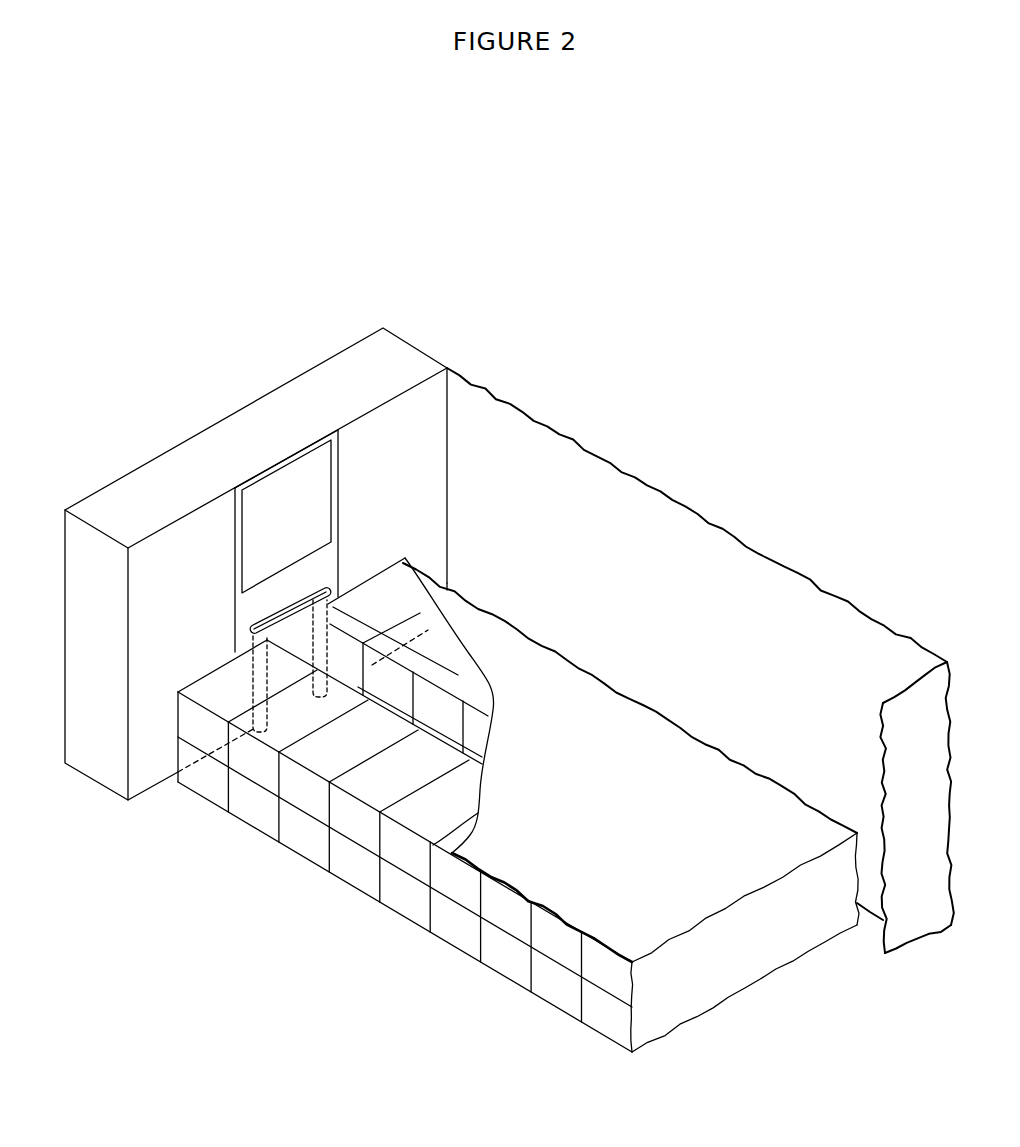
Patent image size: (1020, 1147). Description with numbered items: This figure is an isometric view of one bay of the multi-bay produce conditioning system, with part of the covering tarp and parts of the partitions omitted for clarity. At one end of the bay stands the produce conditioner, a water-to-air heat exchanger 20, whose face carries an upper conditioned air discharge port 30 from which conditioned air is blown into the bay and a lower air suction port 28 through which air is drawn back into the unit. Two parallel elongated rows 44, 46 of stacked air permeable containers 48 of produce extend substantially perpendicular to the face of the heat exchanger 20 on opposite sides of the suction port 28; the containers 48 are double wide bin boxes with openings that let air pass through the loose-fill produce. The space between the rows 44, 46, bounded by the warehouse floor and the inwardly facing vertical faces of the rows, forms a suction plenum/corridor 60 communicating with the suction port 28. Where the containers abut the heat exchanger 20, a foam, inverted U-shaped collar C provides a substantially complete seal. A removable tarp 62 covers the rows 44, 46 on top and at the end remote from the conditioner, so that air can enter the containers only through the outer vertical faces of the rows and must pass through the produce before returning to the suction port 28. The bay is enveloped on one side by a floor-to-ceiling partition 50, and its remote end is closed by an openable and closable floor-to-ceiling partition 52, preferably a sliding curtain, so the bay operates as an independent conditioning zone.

The water-to-air heat exchanger 20 is at (194, 423).
The upper conditioned air discharge port 30 is at (317, 496).
The foam, inverted U-shaped collar C is at (318, 593).
The lower air suction port 28 is at (280, 668).
The row of stacked air permeable containers 44 is at (500, 981).
The air permeable container 48 is at (408, 849).
The row of stacked air permeable containers 46 is at (460, 674).
The suction plenum/corridor 60 is at (450, 732).
The tarp 62 is at (658, 841).
The floor-to-ceiling partition 50 is at (794, 690).
The openable and closable floor-to-ceiling partition 52 is at (932, 835).